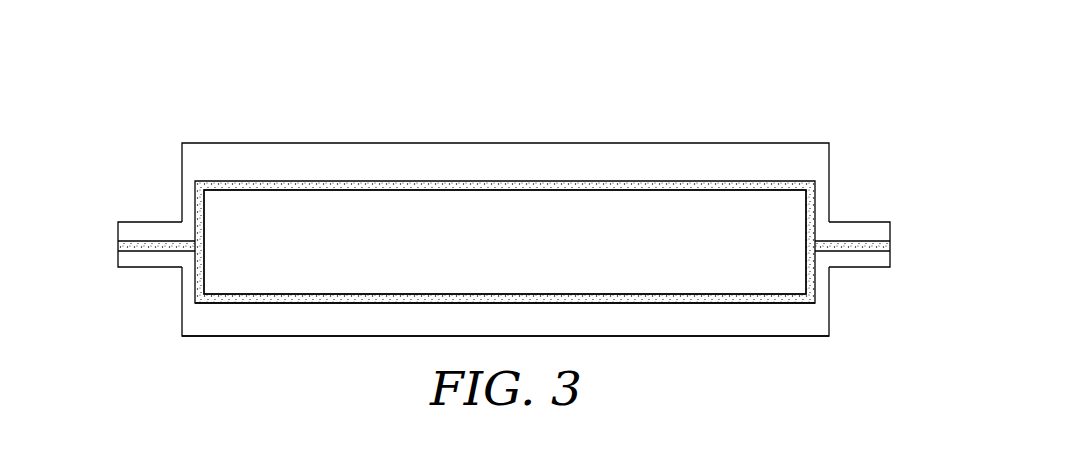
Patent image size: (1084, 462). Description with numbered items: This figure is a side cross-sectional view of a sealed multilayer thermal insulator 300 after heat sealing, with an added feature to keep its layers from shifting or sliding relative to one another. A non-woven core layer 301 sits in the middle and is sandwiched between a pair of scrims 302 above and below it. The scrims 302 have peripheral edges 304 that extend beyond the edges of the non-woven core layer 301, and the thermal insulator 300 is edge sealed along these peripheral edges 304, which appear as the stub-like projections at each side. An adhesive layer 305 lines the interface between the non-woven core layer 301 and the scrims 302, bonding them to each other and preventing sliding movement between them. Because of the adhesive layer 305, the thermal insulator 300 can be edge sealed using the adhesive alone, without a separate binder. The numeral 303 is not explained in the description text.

The thermal insulator 300 is at (800, 108).
The non-woven core layer 301 is at (527, 251).
The scrim 302 is at (527, 173).
The housing bottom wall 303 is at (650, 318).
The peripheral edge 304 is at (112, 246).
The adhesive layer 305 is at (658, 180).